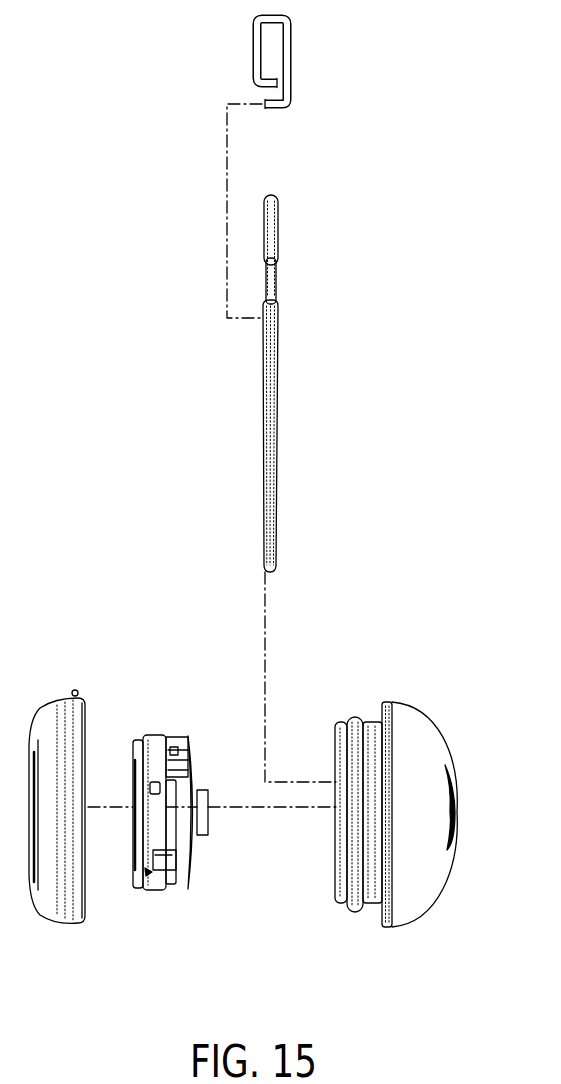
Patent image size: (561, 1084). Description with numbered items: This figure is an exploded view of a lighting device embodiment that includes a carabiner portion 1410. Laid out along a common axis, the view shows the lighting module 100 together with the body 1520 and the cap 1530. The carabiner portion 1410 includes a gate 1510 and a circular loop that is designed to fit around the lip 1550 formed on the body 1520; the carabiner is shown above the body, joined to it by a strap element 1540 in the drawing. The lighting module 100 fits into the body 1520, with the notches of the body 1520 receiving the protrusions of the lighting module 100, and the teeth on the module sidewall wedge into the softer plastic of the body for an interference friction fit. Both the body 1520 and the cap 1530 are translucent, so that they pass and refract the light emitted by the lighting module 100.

The lighting module 100 is at (166, 734).
The carabiner portion 1410 is at (275, 252).
The gate 1510 is at (292, 67).
The body 1520 is at (430, 758).
The cap 1530 is at (87, 902).
The strap 1540 is at (276, 468).
The lip 1550 is at (366, 724).